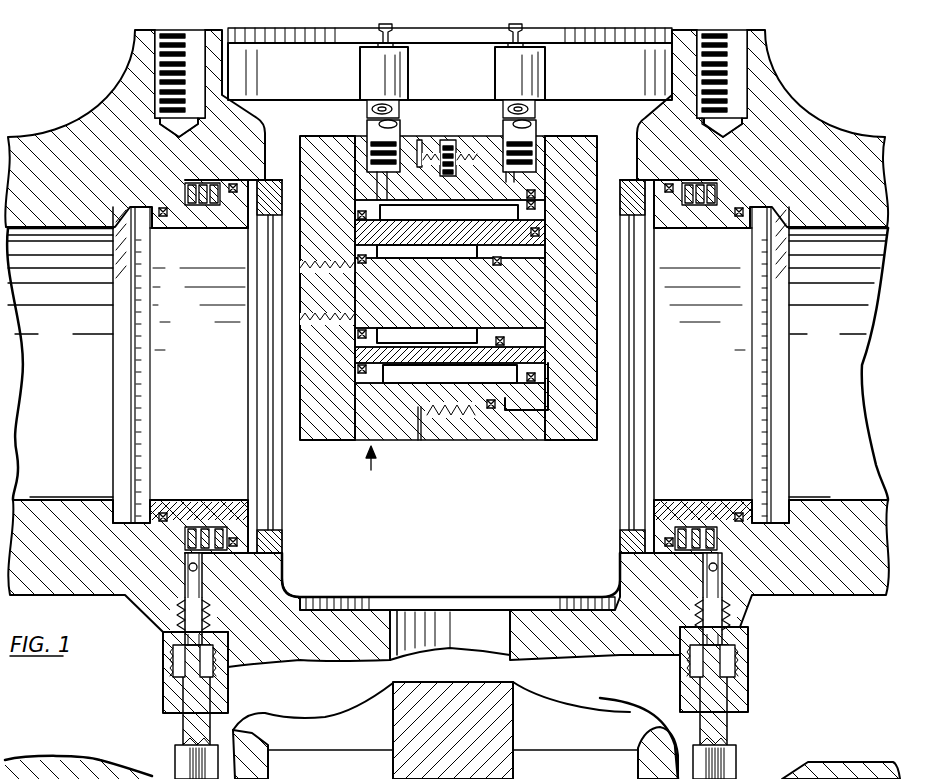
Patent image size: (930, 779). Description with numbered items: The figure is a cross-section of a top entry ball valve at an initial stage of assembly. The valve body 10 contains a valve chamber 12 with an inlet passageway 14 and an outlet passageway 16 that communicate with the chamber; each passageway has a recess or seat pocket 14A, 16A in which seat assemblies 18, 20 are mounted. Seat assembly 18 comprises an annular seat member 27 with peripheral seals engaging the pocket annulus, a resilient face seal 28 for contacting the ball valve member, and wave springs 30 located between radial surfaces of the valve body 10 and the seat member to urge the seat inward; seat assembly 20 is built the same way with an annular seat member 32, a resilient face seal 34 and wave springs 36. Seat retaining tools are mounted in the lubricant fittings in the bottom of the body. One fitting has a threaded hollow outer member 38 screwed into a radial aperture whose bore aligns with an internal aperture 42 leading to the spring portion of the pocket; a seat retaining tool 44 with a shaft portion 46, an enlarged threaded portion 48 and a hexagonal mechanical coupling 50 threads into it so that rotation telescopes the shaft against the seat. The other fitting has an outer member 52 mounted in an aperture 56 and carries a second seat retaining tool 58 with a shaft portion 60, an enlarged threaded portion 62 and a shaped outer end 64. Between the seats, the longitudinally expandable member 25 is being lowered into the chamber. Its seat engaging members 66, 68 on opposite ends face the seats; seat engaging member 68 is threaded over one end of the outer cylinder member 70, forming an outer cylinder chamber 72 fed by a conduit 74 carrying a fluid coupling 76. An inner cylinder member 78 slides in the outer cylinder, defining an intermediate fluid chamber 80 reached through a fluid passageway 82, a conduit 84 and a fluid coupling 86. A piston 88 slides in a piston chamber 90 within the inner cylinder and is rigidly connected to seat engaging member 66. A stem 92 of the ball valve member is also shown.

The valve body 10 is at (88, 130).
The valve chamber 12 is at (477, 569).
The inlet passageway 14 is at (65, 354).
The seat pocket 14A is at (205, 195).
The outlet passageway 16 is at (838, 351).
The seat pocket 16A is at (696, 183).
The seat assembly 18 is at (210, 356).
The seat assembly 20 is at (716, 369).
The longitudinally expandable member 25 is at (371, 470).
The annular seat member 27 is at (193, 230).
The resilient face seal 28 is at (283, 216).
The wave springs 30 is at (185, 188).
The annular seat member 32 is at (690, 232).
The resilient face seal 34 is at (640, 248).
The wave springs 36 is at (722, 195).
The outer member 38 is at (165, 678).
The internal aperture 42 is at (185, 568).
The seat retaining tool 44 is at (192, 722).
The shaft portion 46 is at (195, 588).
The enlarged threaded portion 48 is at (203, 690).
The mechanical coupling 50 is at (182, 765).
The outer member 52 is at (735, 686).
The aperture 56 is at (733, 572).
The seat retaining tool 58 is at (722, 740).
The shaft portion 60 is at (742, 590).
The enlarged threaded portion 62 is at (718, 685).
The shaped outer end 64 is at (738, 766).
The seat engaging member 66 is at (322, 437).
The seat engaging member 68 is at (588, 395).
The outer cylinder member 70 is at (468, 392).
The outer cylinder chamber 72 is at (535, 196).
The conduit 74 is at (538, 128).
The fluid coupling 76 is at (530, 68).
The inner cylinder member 78 is at (427, 352).
The intermediate fluid chamber 80 is at (424, 205).
The fluid passageway 82 is at (380, 190).
The conduit 84 is at (356, 140).
The fluid coupling 86 is at (360, 62).
The piston 88 is at (423, 304).
The piston chamber 90 is at (445, 245).
The stem 92 is at (488, 722).